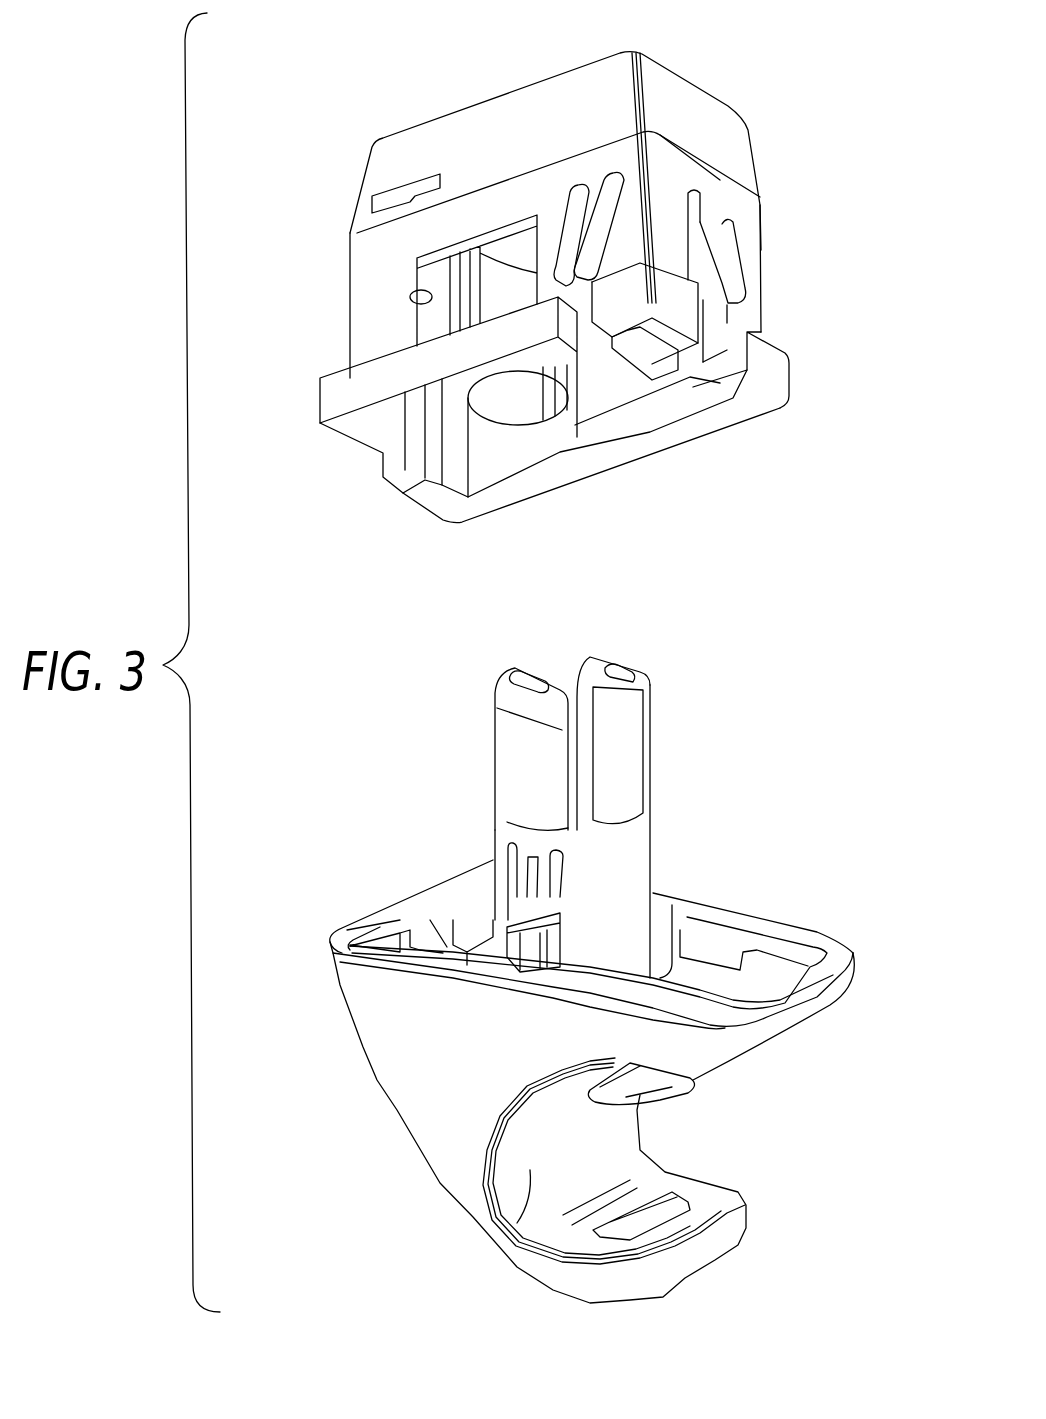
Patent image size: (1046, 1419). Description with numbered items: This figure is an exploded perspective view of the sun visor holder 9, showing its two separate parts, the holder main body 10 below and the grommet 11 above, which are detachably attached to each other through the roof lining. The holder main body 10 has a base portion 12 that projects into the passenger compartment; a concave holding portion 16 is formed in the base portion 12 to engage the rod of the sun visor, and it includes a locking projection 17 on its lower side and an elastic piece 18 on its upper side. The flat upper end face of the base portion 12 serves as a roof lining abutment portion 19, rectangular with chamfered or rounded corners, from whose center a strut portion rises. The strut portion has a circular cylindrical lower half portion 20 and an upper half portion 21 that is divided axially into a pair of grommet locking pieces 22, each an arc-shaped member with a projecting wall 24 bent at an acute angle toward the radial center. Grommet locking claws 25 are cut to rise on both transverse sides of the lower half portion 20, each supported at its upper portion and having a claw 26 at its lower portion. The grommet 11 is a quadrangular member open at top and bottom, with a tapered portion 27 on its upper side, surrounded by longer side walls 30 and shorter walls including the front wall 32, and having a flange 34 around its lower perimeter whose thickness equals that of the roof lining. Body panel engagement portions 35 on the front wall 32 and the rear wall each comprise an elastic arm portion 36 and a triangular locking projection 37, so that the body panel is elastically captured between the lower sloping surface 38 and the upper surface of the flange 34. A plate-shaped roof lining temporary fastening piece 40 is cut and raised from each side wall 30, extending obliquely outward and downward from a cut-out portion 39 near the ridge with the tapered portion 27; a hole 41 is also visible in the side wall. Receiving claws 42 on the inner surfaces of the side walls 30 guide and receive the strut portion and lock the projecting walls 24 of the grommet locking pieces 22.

The sun visor holder 9 is at (575, 667).
The holder main body 10 is at (815, 845).
The grommet 11 is at (335, 97).
The base portion 12 is at (807, 1007).
The holding portion 16 is at (530, 1170).
The locking projection 17 is at (650, 1220).
The elastic piece 18 is at (640, 1095).
The roof lining abutment portion 19 is at (843, 947).
The lower half portion 20 is at (662, 822).
The upper half portion 21 is at (662, 662).
The grommet locking piece 22 is at (513, 752).
The projecting wall 24 is at (537, 670).
The grommet locking claw 25 is at (527, 847).
The claw 26 is at (527, 886).
The tapered portion 27 is at (705, 105).
The side wall 30 is at (485, 212).
The front wall 32 is at (717, 203).
The flange 34 is at (762, 407).
The body panel engagement portion 35 is at (797, 276).
The elastic arm portion 36 is at (717, 327).
The locking projection 37 is at (730, 275).
The lower sloping surface 38 is at (762, 297).
The cut-out portion 39 is at (622, 232).
The roof lining temporary fastening piece 40 is at (573, 253).
The hole 41 is at (410, 298).
The receiving claw 42 is at (522, 422).